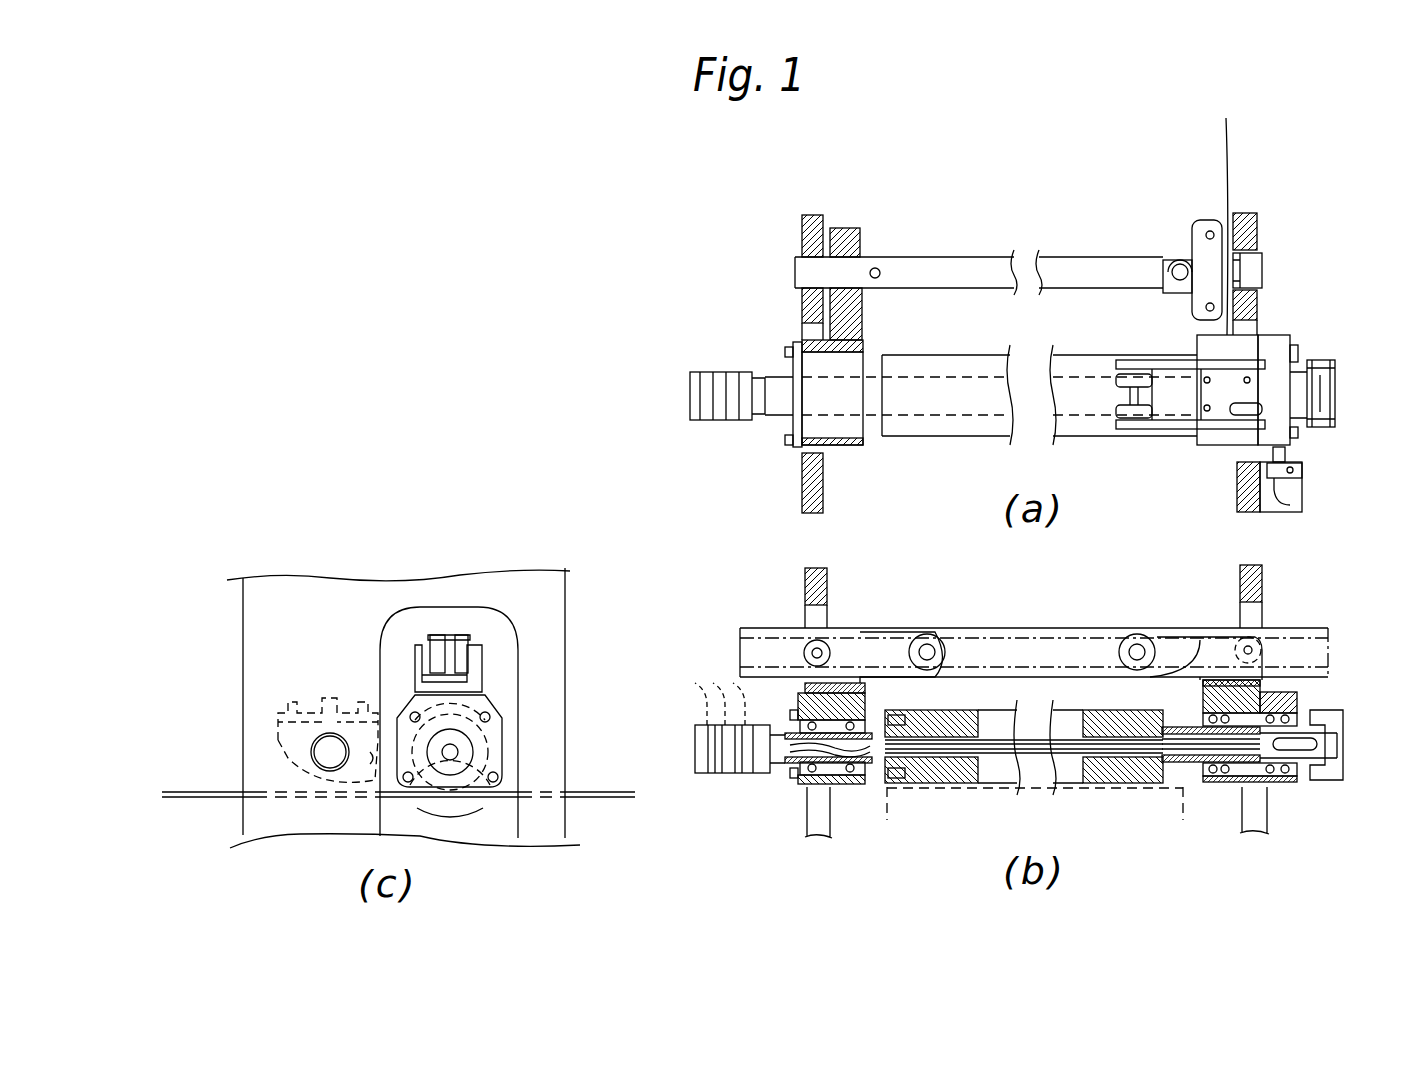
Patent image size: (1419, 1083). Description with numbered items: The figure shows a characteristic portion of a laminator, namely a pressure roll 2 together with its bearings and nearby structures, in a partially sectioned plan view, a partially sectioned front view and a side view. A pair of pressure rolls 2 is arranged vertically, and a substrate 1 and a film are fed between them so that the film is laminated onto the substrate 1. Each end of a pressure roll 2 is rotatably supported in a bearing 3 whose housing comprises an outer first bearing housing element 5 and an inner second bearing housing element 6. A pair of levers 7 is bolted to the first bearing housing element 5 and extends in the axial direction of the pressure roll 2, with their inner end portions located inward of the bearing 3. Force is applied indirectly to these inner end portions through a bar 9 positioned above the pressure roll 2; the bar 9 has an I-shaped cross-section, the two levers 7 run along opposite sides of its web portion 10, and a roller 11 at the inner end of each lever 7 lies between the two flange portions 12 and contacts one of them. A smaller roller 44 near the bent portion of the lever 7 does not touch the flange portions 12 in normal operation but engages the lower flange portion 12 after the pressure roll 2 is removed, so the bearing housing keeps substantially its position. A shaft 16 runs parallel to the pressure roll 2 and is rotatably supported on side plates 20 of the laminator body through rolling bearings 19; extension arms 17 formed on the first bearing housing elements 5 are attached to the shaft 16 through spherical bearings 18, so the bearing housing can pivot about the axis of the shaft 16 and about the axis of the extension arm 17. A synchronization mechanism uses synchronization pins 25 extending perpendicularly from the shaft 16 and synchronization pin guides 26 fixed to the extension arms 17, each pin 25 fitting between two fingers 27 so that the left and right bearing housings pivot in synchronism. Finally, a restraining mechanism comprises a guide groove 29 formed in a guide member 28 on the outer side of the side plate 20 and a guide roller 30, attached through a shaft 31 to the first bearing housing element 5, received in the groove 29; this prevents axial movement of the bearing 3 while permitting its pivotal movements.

The substrate 1 is at (1108, 790).
The pressure roll 2 is at (968, 430).
The bearing 3 is at (852, 462).
The first bearing housing element 5 is at (862, 445).
The second bearing housing element 6 is at (808, 425).
The lever 7 is at (1190, 363).
The bar 9 is at (1110, 635).
The web portion 10 is at (440, 660).
The roller 11 is at (1118, 378).
The flange portion 12 is at (462, 648).
The shaft 16 is at (964, 275).
The extension arm 17 is at (370, 756).
The spherical bearing 18 is at (845, 228).
The rolling bearing 19 is at (805, 232).
The side plate 20 is at (802, 303).
The synchronization pin 25 is at (878, 268).
The synchronization pin guide 26 is at (1222, 206).
The finger 27 is at (1170, 262).
The guide member 28 is at (1262, 498).
The guide groove 29 is at (1292, 471).
The guide roller 30 is at (1290, 483).
The shaft 31 is at (1285, 453).
The roller 44 is at (808, 645).